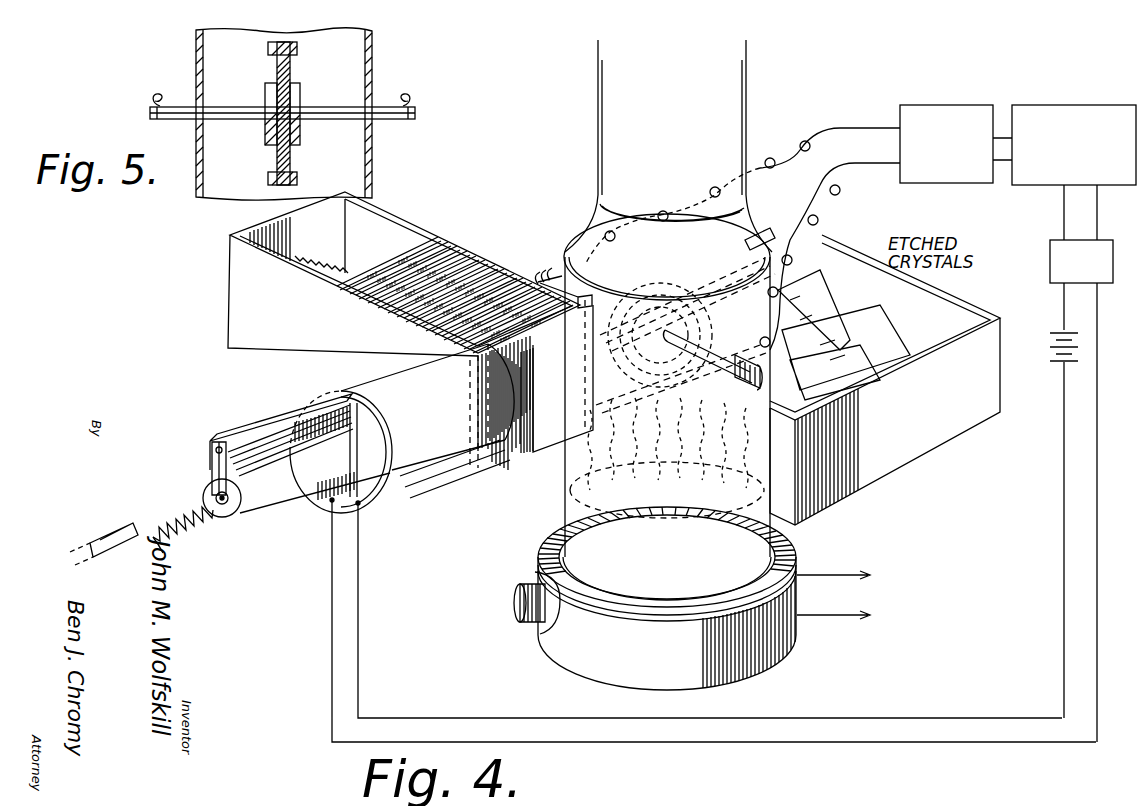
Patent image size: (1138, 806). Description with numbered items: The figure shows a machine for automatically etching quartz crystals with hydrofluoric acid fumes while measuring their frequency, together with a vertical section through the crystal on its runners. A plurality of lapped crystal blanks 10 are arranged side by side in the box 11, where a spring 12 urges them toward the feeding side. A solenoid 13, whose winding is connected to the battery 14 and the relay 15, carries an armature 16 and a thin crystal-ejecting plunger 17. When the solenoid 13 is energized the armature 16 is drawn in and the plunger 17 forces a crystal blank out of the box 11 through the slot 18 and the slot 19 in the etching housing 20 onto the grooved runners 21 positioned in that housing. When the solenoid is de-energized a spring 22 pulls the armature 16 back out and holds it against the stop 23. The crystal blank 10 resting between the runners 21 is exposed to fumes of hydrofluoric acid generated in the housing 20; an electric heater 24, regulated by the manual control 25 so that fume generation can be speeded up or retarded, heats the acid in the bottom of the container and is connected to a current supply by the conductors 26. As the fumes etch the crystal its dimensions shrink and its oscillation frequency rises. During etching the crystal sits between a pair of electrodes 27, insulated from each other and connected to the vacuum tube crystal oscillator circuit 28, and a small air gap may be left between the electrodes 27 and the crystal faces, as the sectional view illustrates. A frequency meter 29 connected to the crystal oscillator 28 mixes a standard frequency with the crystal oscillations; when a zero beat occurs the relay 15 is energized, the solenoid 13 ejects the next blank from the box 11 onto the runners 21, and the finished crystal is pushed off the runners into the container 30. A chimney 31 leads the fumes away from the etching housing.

In FIG. 5, the crystal blank 10 is at (290, 155).
In FIG. 4, the crystal blank 10 is at (508, 278).
In FIG. 4, the box 11 is at (425, 225).
In FIG. 4, the spring 12 is at (310, 258).
In FIG. 4, the solenoid 13 is at (430, 482).
In FIG. 4, the battery 14 is at (1052, 360).
In FIG. 4, the relay 15 is at (1100, 290).
In FIG. 4, the armature 16 is at (260, 500).
In FIG. 4, the crystal-ejecting plunger 17 is at (412, 405).
In FIG. 4, the slot 18 is at (580, 306).
In FIG. 5, the slot 19 is at (288, 175).
In FIG. 4, the slot 19 is at (580, 366).
In FIG. 5, the etching housing 20 is at (307, 114).
In FIG. 4, the etching housing 20 is at (572, 478).
In FIG. 5, the grooved runners 21 is at (297, 47).
In FIG. 4, the grooved runners 21 is at (722, 398).
In FIG. 4, the spring 22 is at (155, 522).
In FIG. 4, the stop 23 is at (212, 468).
In FIG. 4, the electric heater 24 is at (750, 656).
In FIG. 4, the manual control 25 is at (518, 612).
In FIG. 4, the conductors 26 is at (853, 618).
In FIG. 5, the electrodes 27 is at (300, 96).
In FIG. 4, the electrodes 27 is at (650, 355).
In FIG. 4, the crystal oscillator circuit 28 is at (930, 106).
In FIG. 4, the frequency meter 29 is at (1080, 106).
In FIG. 4, the container 30 is at (920, 462).
In FIG. 4, the chimney 31 is at (746, 116).